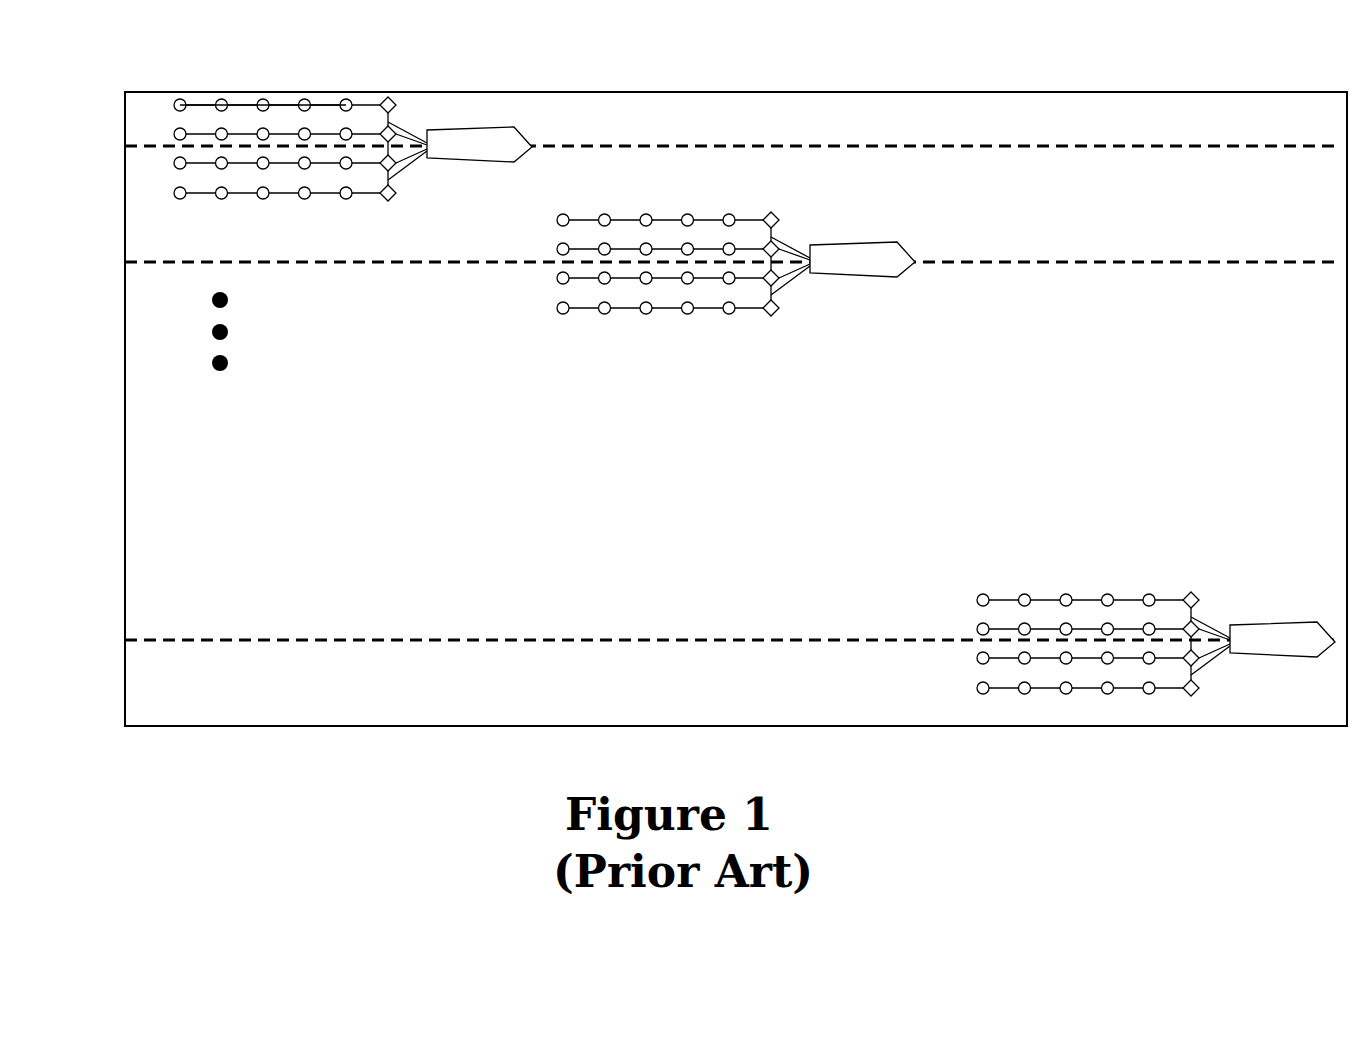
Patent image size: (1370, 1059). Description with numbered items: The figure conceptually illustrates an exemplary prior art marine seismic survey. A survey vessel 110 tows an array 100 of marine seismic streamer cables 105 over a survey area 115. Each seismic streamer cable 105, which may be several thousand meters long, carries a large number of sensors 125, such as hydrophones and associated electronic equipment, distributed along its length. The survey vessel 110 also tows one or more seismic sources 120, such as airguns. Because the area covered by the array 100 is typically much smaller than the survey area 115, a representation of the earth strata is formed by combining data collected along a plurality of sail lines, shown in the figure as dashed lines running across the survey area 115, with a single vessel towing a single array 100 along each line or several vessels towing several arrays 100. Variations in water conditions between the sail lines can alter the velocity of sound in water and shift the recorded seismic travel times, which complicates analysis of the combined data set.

The array 100 is at (653, 367).
The marine seismic streamer cable 105 is at (281, 174).
The survey vessel 110 is at (498, 128).
The survey area 115 is at (912, 727).
The seismic source 120 is at (415, 125).
The sensor 125 is at (232, 72).